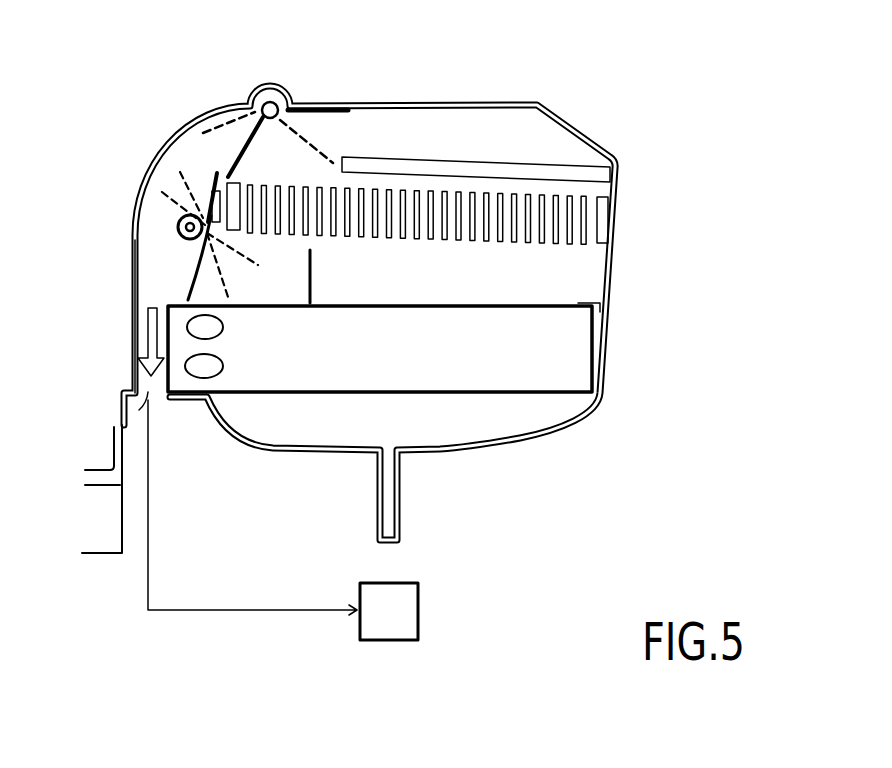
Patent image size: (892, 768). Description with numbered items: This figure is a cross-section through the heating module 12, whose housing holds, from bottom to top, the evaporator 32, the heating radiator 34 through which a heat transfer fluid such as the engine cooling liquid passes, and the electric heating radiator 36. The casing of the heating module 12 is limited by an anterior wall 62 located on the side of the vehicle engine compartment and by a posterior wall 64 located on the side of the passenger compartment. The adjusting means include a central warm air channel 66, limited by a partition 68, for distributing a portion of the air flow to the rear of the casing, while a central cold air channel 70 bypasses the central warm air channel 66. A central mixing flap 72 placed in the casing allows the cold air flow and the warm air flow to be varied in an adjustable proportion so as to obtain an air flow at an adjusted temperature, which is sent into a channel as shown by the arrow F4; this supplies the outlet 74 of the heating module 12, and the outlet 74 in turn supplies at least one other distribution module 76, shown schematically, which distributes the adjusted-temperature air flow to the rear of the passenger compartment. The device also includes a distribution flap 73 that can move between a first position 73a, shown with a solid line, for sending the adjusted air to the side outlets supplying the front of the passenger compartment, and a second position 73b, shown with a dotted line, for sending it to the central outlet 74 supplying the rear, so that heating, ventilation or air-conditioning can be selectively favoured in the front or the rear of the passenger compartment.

The heating module 12 is at (540, 437).
The evaporator 32 is at (313, 375).
The heating radiator 34 is at (553, 223).
The electric heating radiator 36 is at (582, 175).
The anterior wall 62 is at (133, 245).
The posterior wall 64 is at (612, 282).
The central warm air channel 66 is at (290, 165).
The partition 68 is at (312, 262).
The central cold air channel 70 is at (167, 255).
The central mixing flap 72 is at (212, 197).
The distribution flap 73 is at (259, 74).
The first position 73a is at (331, 103).
The second position 73b is at (220, 125).
The outlet 74 is at (133, 402).
The distribution module 76 is at (404, 626).
The arrow F4 is at (148, 328).